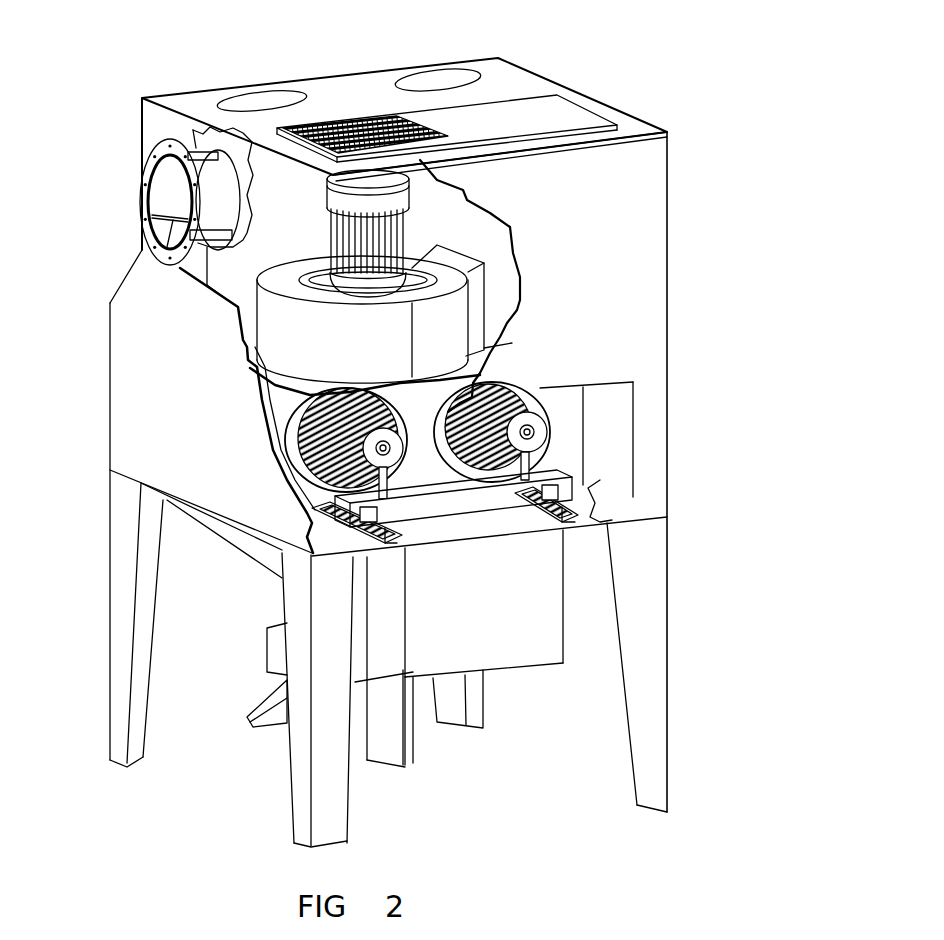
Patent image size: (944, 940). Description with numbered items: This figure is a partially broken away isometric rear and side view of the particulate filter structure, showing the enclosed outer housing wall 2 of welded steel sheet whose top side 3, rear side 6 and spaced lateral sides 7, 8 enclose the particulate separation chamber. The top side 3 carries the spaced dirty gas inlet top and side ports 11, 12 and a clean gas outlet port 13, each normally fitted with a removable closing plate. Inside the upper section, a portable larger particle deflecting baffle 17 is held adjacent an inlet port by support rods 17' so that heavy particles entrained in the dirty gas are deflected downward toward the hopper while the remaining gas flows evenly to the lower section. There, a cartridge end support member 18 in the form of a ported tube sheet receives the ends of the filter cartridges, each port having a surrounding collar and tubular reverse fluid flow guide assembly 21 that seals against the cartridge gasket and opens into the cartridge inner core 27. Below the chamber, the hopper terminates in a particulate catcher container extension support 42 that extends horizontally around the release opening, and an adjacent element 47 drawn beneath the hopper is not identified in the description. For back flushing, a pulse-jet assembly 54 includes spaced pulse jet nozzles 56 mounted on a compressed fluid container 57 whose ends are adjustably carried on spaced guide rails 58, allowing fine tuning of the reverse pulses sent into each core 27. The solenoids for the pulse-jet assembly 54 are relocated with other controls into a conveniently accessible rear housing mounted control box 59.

The outer housing wall 2 is at (442, 472).
The top side 3 is at (358, 108).
The rear side 6 is at (605, 304).
The lateral side 7 is at (172, 399).
The lateral side 8 is at (668, 347).
The dirty gas inlet top port 11 is at (257, 98).
The dirty gas inlet side port 12 is at (423, 77).
The clean gas outlet port 13 is at (325, 128).
The larger particle deflecting baffle 17 is at (188, 147).
The support rod 17' is at (159, 241).
The cartridge end support member 18 is at (443, 481).
The tubular reverse fluid flow guide assembly 21 is at (297, 432).
The inner core 27 is at (482, 400).
The particulate catcher container extension support 42 is at (257, 703).
The outlet connection 47 is at (273, 650).
The pulse-jet assembly 54 is at (668, 487).
The pulse jet nozzle 56 is at (317, 473).
The compressed fluid container 57 is at (468, 507).
The guide rail 58 is at (367, 537).
The control box 59 is at (487, 648).